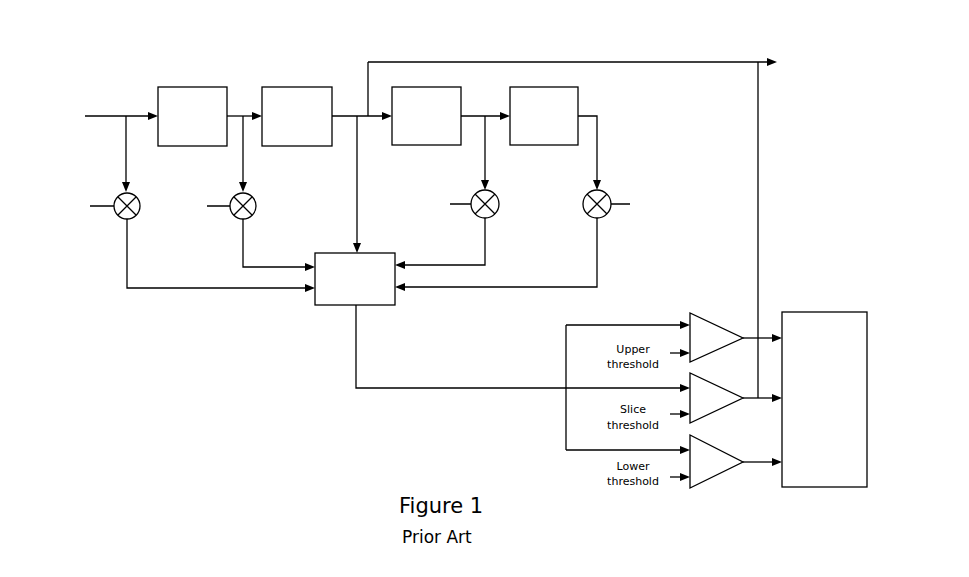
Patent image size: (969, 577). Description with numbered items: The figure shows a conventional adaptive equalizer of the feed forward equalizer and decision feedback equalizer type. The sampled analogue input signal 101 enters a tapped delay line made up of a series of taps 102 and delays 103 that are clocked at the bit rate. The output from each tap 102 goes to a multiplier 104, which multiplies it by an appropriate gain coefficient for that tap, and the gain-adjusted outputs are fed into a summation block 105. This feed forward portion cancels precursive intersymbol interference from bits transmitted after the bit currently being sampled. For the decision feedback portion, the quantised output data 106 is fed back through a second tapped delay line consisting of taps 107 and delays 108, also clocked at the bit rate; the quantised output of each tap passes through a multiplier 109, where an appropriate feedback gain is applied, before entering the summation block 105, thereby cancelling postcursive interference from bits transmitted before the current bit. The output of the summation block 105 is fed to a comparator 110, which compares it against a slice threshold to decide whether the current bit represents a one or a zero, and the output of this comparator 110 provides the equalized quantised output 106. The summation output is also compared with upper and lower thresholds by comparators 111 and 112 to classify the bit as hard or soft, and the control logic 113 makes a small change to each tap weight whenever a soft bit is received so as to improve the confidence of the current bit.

The input signal 101 is at (101, 114).
The taps 102 is at (245, 105).
The delays 103 is at (245, 116).
The multiplier 104 is at (230, 217).
The summation block 105 is at (327, 305).
The quantised output data 106 is at (606, 221).
The taps 107 is at (489, 125).
The delays 108 is at (485, 116).
The multiplier 109 is at (490, 213).
The comparator 110 is at (722, 403).
The comparator 111 is at (707, 320).
The comparator 112 is at (722, 470).
The control logic 113 is at (824, 399).